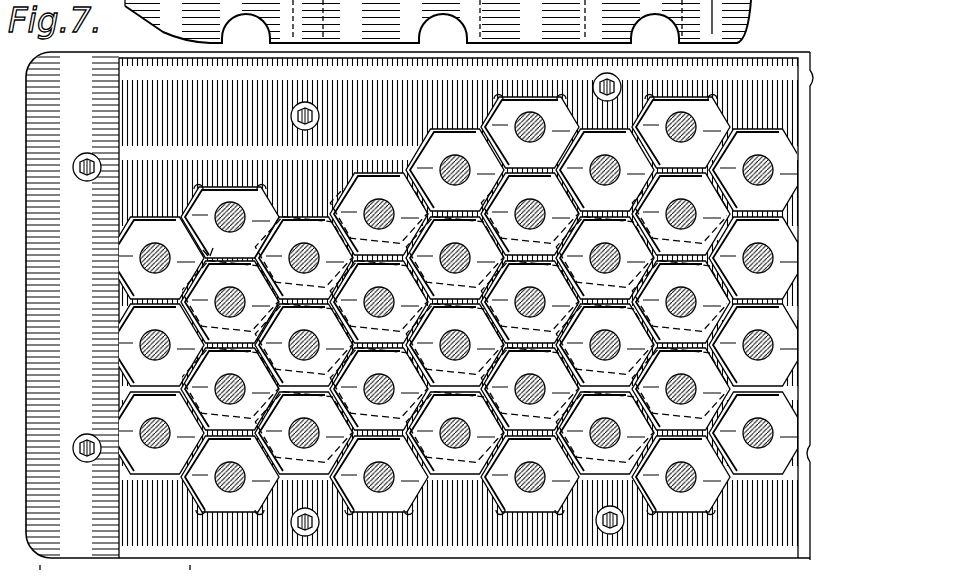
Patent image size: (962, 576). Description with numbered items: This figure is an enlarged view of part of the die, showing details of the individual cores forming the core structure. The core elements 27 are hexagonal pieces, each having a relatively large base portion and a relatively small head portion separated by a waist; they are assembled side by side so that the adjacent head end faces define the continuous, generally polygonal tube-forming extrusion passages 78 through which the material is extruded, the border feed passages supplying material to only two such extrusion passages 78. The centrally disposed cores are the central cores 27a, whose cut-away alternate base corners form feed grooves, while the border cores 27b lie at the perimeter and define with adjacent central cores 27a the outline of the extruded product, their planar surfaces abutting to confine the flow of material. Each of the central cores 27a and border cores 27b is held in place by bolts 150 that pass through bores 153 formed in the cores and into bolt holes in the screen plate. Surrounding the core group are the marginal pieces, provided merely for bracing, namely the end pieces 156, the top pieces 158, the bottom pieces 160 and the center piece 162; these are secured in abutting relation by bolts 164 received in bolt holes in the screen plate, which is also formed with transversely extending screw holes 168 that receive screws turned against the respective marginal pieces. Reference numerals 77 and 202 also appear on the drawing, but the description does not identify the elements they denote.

The core elements 27 is at (444, 118).
The central cores 27a is at (655, 206).
The border cores 27b is at (128, 264).
The extrusion passages 78 is at (213, 248).
The bolts 150 is at (317, 252).
The bores 153 is at (238, 204).
The end pieces 156 is at (90, 540).
The top pieces 158 is at (742, 76).
The bottom pieces 160 is at (565, 0).
The center piece 162 is at (808, 58).
The bolts 164 is at (101, 166).
The screw holes 168 is at (153, 4).
The frame member 77 is at (34, 570).
The frame member 202 is at (180, 570).